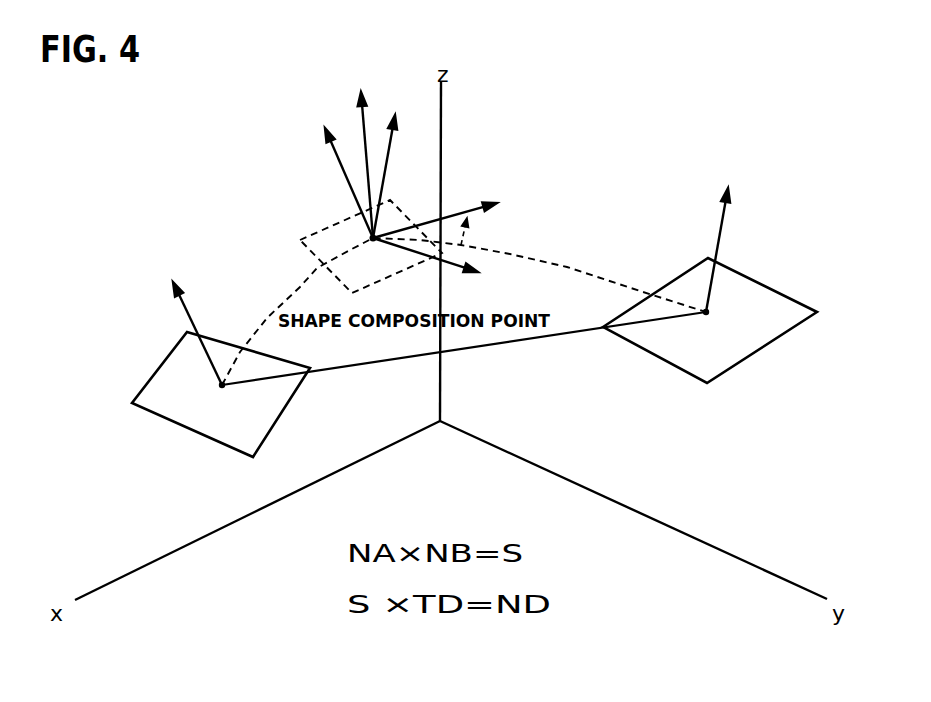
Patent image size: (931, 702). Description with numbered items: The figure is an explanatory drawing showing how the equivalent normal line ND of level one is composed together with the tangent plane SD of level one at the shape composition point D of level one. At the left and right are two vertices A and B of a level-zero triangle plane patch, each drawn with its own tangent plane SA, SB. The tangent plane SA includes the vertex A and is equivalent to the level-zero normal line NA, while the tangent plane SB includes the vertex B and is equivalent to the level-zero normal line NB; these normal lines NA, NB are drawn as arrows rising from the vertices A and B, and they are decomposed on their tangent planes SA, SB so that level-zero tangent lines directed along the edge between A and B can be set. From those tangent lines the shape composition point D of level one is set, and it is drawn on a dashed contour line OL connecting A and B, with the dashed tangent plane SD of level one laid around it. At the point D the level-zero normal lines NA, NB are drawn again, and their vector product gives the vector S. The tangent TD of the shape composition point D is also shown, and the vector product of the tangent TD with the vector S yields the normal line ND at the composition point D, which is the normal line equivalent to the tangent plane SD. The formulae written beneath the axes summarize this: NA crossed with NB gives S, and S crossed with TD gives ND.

The normal line of level 0 at vertex A NA is at (138, 315).
The normal line of level 0 at vertex B NB is at (777, 230).
The equivalent normal line of level 1 ND is at (363, 150).
The tangent of shape composition point D TD is at (460, 215).
The vector product of normal lines NA and NB S is at (437, 263).
The tangent plane of level 1 SD is at (300, 240).
The shape composition point of level 1 D is at (373, 238).
The contour line OL is at (567, 267).
The tangent plane at vertex A SA is at (162, 405).
The tangent plane at vertex B SB is at (760, 335).
The vertex A of triangle plane patch A is at (218, 399).
The vertex B of triangle plane patch B is at (700, 326).